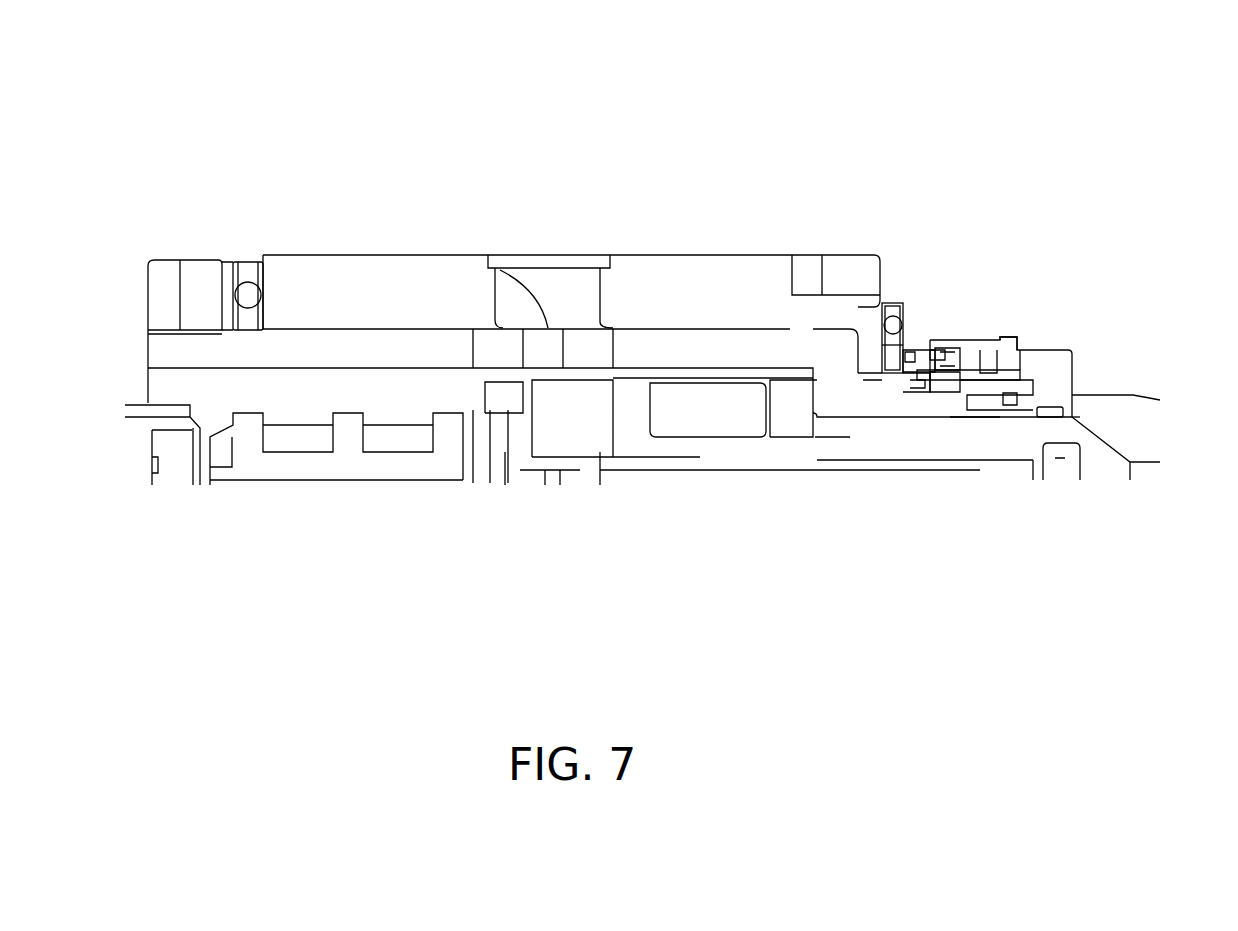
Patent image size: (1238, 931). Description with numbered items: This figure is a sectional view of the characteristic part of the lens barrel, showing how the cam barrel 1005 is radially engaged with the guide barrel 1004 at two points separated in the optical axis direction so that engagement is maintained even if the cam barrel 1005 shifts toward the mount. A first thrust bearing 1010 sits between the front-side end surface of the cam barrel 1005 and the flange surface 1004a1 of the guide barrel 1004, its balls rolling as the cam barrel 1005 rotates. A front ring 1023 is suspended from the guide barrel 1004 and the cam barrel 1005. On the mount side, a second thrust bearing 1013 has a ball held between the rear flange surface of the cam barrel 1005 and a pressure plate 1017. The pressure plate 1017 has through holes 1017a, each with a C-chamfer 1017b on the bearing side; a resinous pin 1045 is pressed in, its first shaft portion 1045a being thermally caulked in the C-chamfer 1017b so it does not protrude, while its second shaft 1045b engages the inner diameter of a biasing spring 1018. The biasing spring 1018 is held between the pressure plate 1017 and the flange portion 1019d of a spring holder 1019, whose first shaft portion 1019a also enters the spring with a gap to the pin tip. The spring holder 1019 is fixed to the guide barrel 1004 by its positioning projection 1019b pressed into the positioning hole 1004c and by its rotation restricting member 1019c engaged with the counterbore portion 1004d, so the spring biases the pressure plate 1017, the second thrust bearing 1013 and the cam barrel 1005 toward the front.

The guide barrel 1004 is at (170, 352).
The flange surface 1004a1 is at (232, 277).
The positioning hole 1004c is at (1075, 415).
The counterbore portion 1004d is at (960, 378).
The cam barrel 1005 is at (362, 273).
The first thrust bearing 1010 is at (250, 262).
The second thrust bearing 1013 is at (893, 355).
The pressure plate 1017 is at (917, 303).
The through hole 1017a is at (922, 352).
The C-chamfer 1017b is at (916, 365).
The biasing spring 1018 is at (937, 378).
The spring holder 1019 is at (1035, 363).
The first shaft portion 1019a is at (990, 358).
The positioning projection 1019b is at (1050, 407).
The rotation restricting member 1019c is at (985, 395).
The flange portion 1019d is at (1012, 340).
The front ring 1023 is at (323, 467).
The pin 1045 is at (953, 365).
The first shaft portion 1045a is at (913, 355).
The second shaft 1045b is at (937, 355).